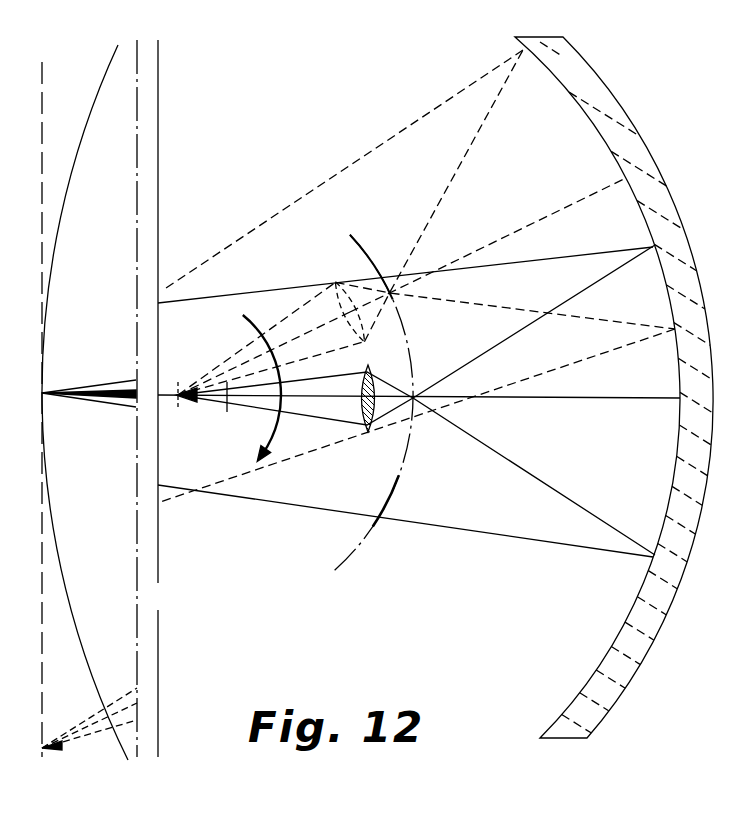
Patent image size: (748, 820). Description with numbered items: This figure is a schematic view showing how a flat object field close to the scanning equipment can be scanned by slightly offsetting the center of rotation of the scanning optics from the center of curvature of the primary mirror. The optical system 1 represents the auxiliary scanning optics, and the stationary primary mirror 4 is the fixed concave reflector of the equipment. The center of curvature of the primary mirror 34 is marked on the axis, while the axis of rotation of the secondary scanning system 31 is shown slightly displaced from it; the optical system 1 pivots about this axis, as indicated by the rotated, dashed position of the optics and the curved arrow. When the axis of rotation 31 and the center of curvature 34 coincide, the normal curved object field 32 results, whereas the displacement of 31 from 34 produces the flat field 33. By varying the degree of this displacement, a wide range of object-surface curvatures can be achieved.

The optical system 1 is at (344, 468).
The stationary primary mirror 4 is at (573, 102).
The axis of rotation of the secondary scanning system 31 is at (178, 392).
The normal curved object field 32 is at (73, 168).
The flat field 33 is at (45, 87).
The center of curvature of the primary mirror 34 is at (226, 396).